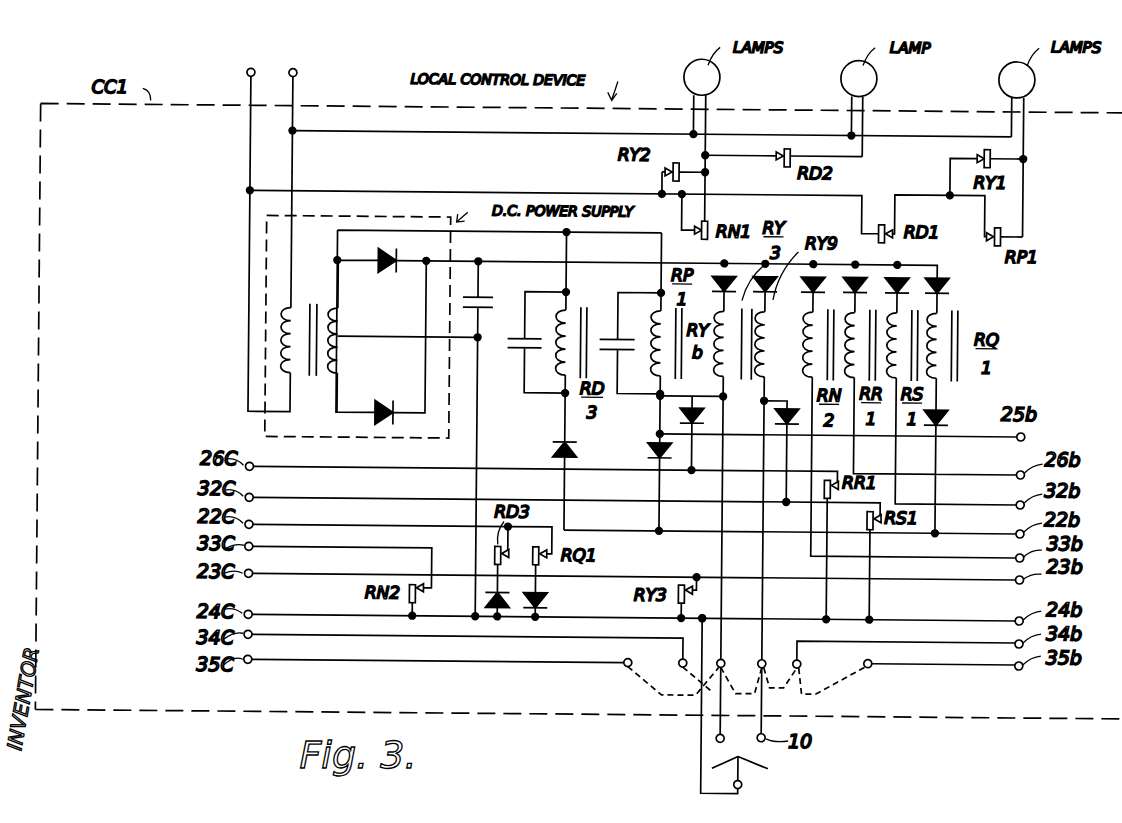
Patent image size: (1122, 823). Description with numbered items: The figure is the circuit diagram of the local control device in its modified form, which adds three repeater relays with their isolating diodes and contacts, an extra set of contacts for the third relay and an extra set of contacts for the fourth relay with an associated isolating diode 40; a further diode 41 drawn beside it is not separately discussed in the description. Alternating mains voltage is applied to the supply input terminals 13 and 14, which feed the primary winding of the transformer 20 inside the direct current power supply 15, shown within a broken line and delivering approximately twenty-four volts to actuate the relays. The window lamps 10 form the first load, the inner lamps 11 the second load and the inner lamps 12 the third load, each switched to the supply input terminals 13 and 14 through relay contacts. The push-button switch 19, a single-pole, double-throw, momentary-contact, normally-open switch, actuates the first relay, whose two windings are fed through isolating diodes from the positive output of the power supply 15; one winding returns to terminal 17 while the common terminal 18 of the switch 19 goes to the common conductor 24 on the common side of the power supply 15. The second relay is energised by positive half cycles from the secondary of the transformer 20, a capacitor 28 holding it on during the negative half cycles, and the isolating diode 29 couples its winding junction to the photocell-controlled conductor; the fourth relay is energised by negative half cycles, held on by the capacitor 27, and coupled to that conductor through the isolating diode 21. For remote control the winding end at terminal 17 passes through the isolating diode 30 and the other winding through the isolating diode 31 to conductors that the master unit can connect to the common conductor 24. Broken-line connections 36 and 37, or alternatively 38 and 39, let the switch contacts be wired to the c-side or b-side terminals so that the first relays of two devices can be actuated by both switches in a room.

The window lamps 10 is at (992, 75).
The inner lamps 11 is at (681, 78).
The inner lamps 12 is at (836, 76).
The supply input terminal 13 is at (295, 77).
The supply input terminal 14 is at (245, 76).
The direct current power supply 15 is at (262, 432).
The switch terminal 17 is at (716, 742).
The common terminal 18 is at (748, 783).
The push-button switch 19 is at (773, 750).
The transformer 20 is at (314, 386).
The isolating diode 21 is at (553, 450).
The common conductor 24 is at (972, 613).
The capacitor 27 is at (524, 342).
The capacitor 28 is at (631, 352).
The isolating diode 29 is at (648, 447).
The isolating diode 30 is at (694, 410).
The isolating diode 31 is at (796, 404).
The broken-line connection 36 is at (734, 653).
The broken-line connection 37 is at (651, 692).
The broken-line connection 38 is at (806, 668).
The broken-line connection 39 is at (840, 676).
The isolating diode 40 is at (516, 605).
The diode 41 is at (554, 593).